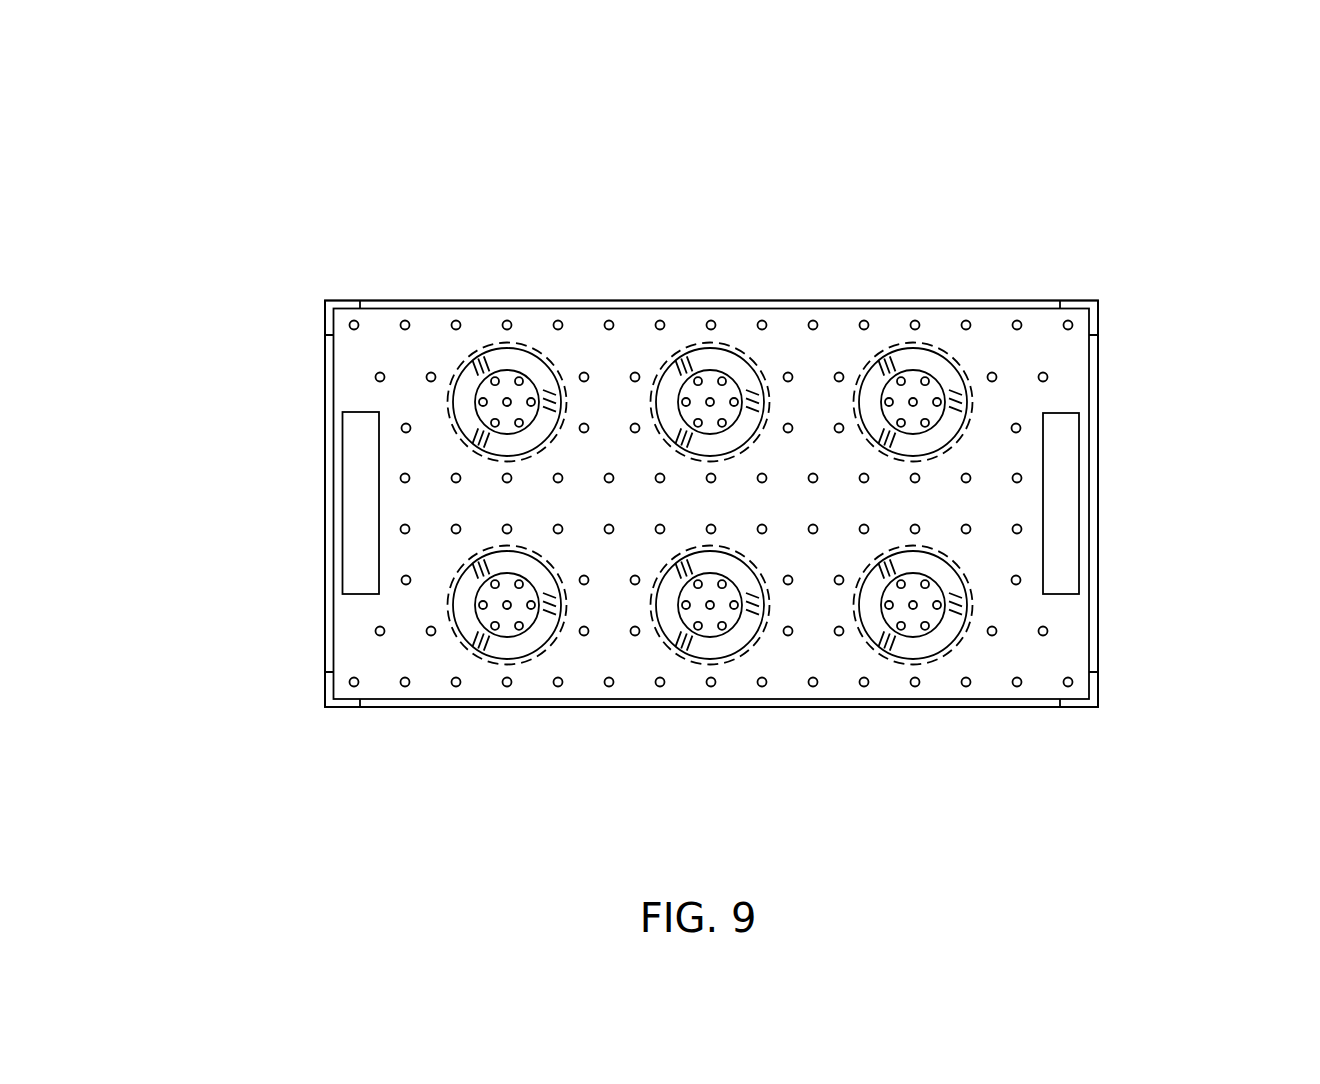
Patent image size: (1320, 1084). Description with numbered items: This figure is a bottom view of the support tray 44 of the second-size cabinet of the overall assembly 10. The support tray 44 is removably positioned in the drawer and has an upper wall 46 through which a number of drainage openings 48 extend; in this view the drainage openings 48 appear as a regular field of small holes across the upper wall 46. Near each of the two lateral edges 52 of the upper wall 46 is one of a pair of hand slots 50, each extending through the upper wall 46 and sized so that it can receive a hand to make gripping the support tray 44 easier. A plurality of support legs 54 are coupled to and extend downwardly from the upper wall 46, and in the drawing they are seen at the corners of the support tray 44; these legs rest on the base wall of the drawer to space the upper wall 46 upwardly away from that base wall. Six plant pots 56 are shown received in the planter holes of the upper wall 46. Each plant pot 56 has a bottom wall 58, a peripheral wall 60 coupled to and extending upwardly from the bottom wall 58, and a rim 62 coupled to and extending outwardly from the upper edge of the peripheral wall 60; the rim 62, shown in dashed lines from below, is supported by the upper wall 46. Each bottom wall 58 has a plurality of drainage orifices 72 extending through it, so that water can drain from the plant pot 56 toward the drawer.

The lighting device 10 is at (1048, 146).
The support tray 44 is at (1062, 240).
The upper wall 46 is at (637, 340).
The drainage opening 48 is at (405, 324).
The hand slot 50 is at (362, 515).
The lateral edge 52 is at (324, 448).
The support leg 54 is at (324, 300).
The plant pot 56 is at (474, 318).
The bottom wall 58 is at (930, 410).
The peripheral wall 60 is at (468, 380).
The rim 62 is at (550, 357).
The drainage orifice 72 is at (520, 378).